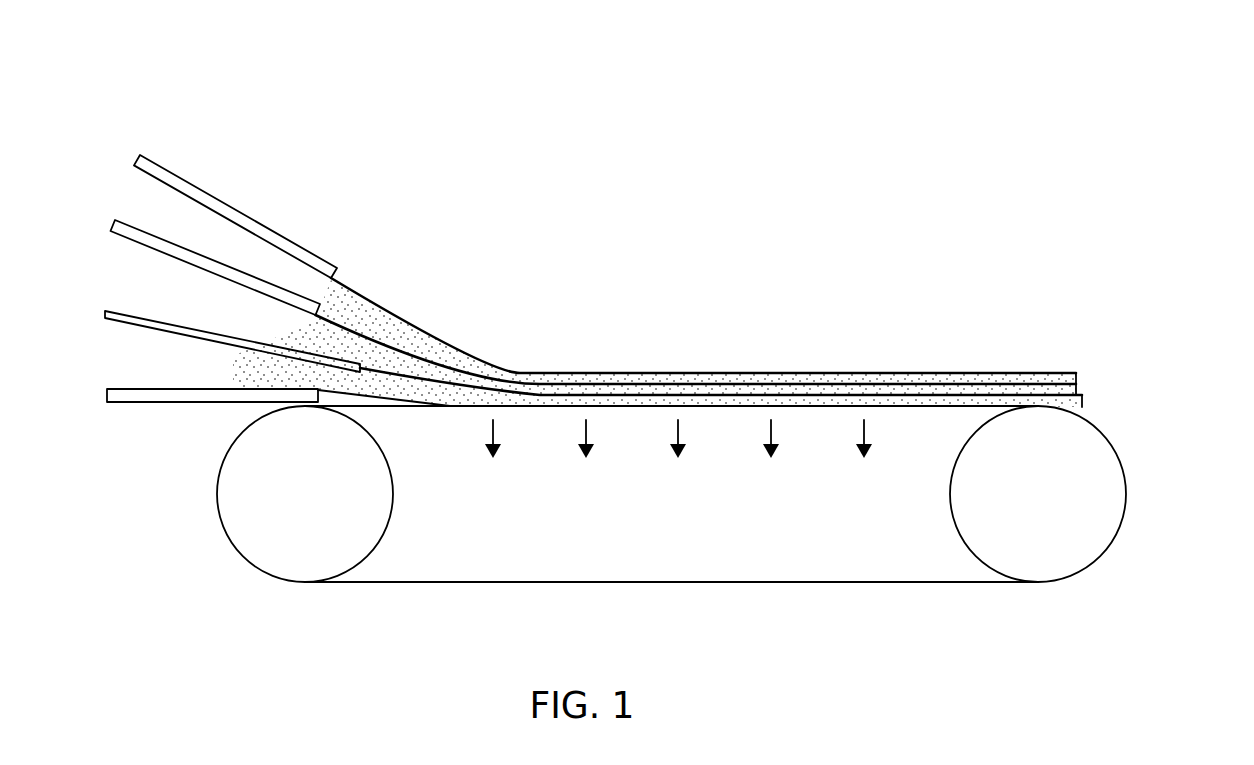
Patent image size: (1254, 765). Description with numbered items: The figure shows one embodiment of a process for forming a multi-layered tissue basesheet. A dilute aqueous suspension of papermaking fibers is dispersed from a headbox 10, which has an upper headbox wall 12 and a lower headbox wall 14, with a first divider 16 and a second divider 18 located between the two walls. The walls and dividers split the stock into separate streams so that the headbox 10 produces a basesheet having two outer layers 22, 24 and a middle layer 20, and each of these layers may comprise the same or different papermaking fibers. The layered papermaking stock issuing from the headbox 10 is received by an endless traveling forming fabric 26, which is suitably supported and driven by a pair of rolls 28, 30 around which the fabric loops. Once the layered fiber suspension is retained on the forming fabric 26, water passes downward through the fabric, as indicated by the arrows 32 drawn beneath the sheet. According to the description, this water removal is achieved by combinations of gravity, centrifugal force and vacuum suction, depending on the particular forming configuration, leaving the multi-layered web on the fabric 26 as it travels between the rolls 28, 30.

The headbox 10 is at (229, 108).
The upper headbox wall 12 is at (270, 230).
The lower headbox wall 14 is at (132, 402).
The first divider 16 is at (137, 226).
The second divider 18 is at (105, 312).
The middle layer 20 is at (415, 367).
The outer layer 22 is at (552, 372).
The outer layer 24 is at (438, 407).
The forming fabric 26 is at (884, 583).
The roll 28 is at (237, 507).
The roll 30 is at (1110, 487).
The arrows 32 is at (586, 428).